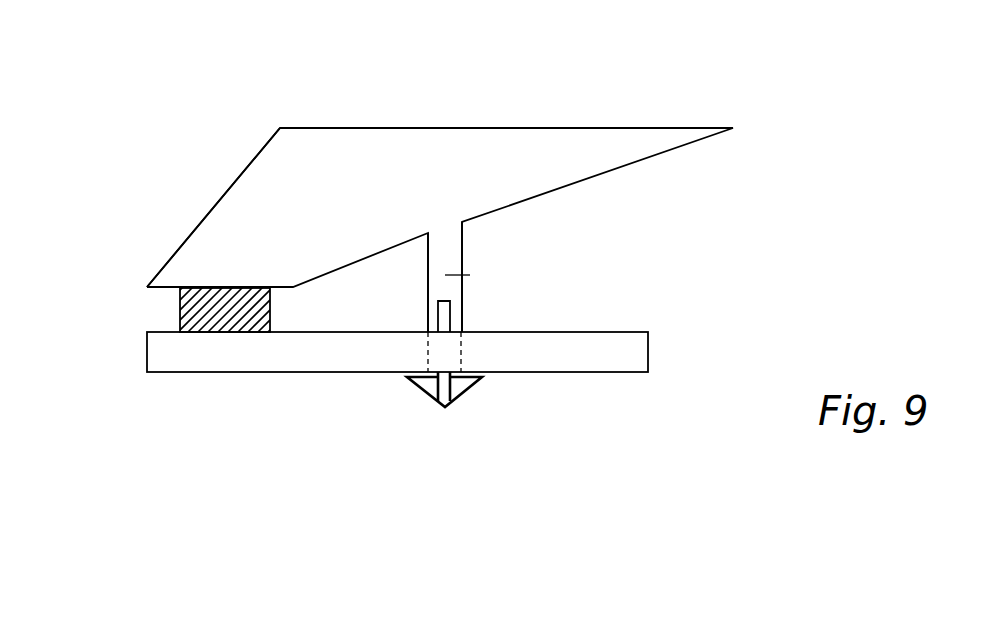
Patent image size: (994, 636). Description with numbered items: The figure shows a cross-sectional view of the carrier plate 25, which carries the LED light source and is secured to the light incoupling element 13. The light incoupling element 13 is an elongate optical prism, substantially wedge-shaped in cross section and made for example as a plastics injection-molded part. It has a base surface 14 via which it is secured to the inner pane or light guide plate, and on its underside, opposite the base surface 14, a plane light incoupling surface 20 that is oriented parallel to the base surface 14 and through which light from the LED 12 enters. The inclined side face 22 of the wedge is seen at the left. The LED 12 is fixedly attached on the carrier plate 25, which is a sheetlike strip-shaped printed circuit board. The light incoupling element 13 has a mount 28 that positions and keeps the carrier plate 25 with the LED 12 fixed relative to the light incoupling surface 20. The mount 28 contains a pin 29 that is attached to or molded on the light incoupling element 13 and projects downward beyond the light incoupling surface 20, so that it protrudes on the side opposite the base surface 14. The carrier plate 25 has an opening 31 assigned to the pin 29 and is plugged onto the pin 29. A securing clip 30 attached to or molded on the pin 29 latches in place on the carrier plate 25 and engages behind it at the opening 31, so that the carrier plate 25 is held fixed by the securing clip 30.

The LED 12 is at (178, 313).
The light incoupling element 13 is at (437, 157).
The base surface 14 is at (588, 115).
The light incoupling surface 20 is at (285, 300).
The inclined side face 22 is at (225, 175).
The carrier plate 25 is at (210, 353).
The mount 28 is at (491, 297).
The pin 29 is at (448, 275).
The securing clip 30 is at (419, 408).
The opening 31 is at (440, 355).